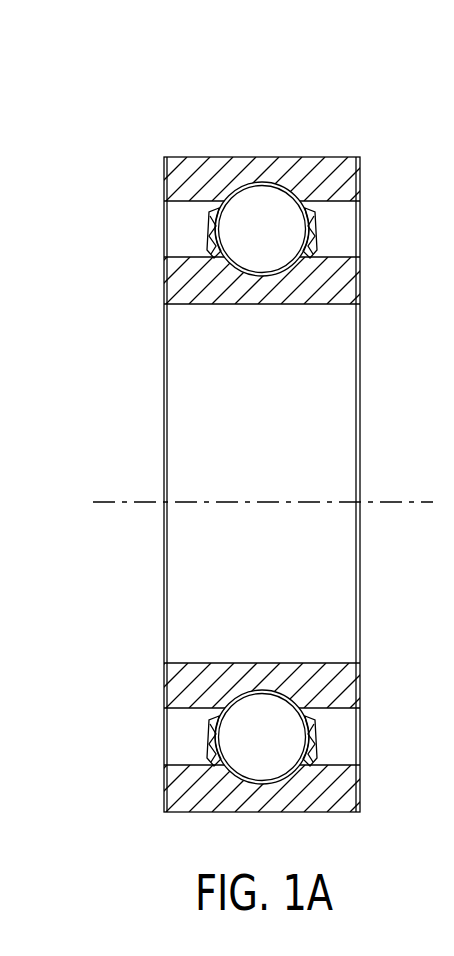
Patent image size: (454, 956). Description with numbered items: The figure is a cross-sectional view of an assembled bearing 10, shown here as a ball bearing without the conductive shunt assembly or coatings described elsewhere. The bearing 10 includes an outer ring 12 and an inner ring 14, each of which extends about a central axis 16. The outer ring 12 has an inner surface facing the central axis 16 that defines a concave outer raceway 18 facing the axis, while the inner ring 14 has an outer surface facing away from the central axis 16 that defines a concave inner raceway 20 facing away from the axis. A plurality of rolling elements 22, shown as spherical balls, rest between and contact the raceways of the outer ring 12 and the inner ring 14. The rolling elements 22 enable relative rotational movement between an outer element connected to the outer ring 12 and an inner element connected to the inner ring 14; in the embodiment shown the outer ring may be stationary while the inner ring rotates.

The bearing 10 is at (152, 122).
The outer ring 12 is at (328, 173).
The inner ring 14 is at (338, 293).
The central axis 16 is at (100, 505).
The outer raceway 18 is at (268, 182).
The inner raceway 20 is at (262, 277).
The rolling elements 22 is at (262, 245).